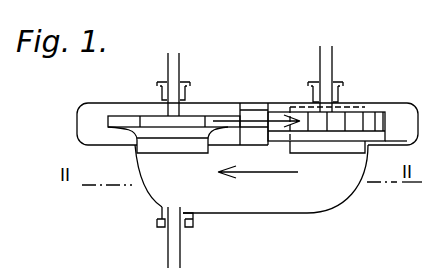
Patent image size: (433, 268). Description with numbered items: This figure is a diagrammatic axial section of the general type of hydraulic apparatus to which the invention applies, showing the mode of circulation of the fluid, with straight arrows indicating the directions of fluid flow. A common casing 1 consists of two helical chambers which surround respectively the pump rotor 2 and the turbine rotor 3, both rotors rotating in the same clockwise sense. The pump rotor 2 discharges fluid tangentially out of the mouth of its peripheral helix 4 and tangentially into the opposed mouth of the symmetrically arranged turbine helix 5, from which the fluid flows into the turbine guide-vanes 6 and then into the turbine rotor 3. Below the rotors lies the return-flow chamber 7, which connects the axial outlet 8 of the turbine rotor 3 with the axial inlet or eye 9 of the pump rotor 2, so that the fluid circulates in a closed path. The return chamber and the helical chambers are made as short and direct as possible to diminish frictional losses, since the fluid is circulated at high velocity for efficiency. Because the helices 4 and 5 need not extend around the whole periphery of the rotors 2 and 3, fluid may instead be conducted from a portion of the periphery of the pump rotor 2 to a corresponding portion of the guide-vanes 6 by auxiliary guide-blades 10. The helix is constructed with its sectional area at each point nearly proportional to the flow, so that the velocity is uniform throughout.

The common casing 1 is at (210, 103).
The pump rotor 2 is at (174, 126).
The turbine rotor 3 is at (348, 141).
The peripheral helix 4 is at (86, 124).
The turbine helix 5 is at (407, 124).
The turbine guide-vanes 6 is at (335, 120).
The return-flow chamber 7 is at (262, 206).
The axial outlet 8 is at (310, 153).
The axial inlet or eye 9 is at (149, 152).
The auxiliary guide-blades 10 is at (255, 112).